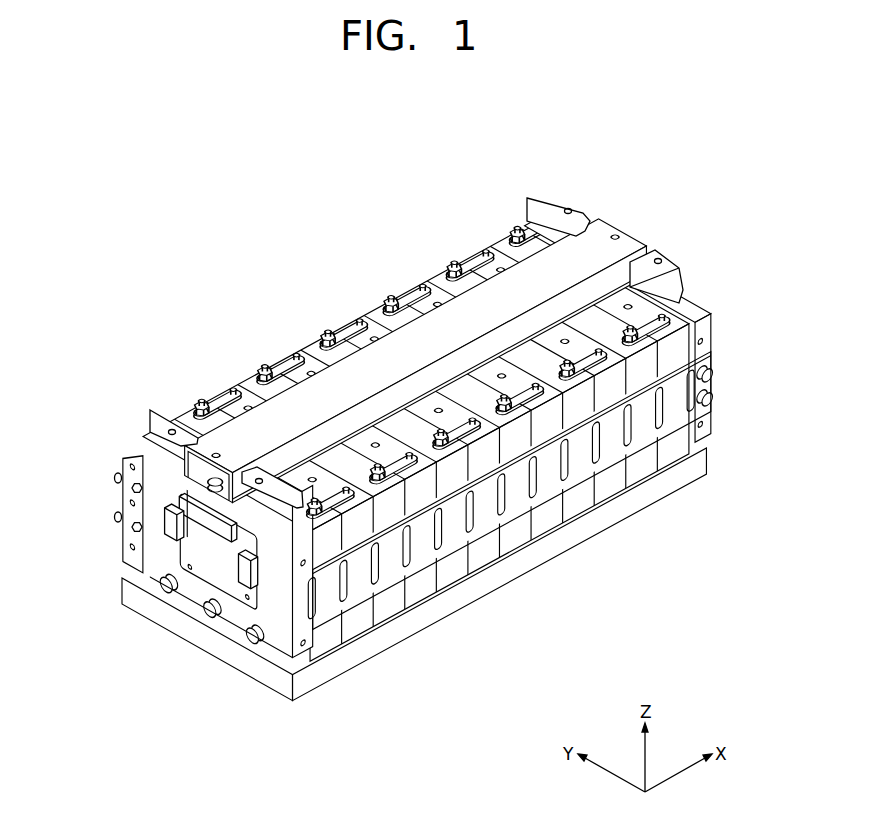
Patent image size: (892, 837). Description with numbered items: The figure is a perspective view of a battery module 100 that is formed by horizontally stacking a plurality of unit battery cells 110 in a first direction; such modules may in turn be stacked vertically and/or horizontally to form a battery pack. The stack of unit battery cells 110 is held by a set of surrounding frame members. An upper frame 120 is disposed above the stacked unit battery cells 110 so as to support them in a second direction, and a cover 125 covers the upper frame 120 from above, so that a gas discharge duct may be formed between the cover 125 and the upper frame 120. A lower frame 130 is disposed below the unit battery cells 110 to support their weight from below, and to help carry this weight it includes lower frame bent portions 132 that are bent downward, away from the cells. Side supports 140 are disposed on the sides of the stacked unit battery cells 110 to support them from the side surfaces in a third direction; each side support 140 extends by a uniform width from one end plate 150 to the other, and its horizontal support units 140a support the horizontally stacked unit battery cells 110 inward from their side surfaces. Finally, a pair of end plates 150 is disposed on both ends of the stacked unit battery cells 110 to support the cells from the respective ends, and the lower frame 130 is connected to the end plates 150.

The battery module 100 is at (667, 212).
The unit battery cells 110 is at (667, 460).
The upper frame 120 is at (187, 481).
The cover 125 is at (185, 462).
The lower frame 130 is at (320, 696).
The lower frame bent portions 132 is at (362, 658).
The side supports 140 is at (575, 495).
The horizontal support units 140a is at (518, 500).
The end plates 150 is at (703, 337).